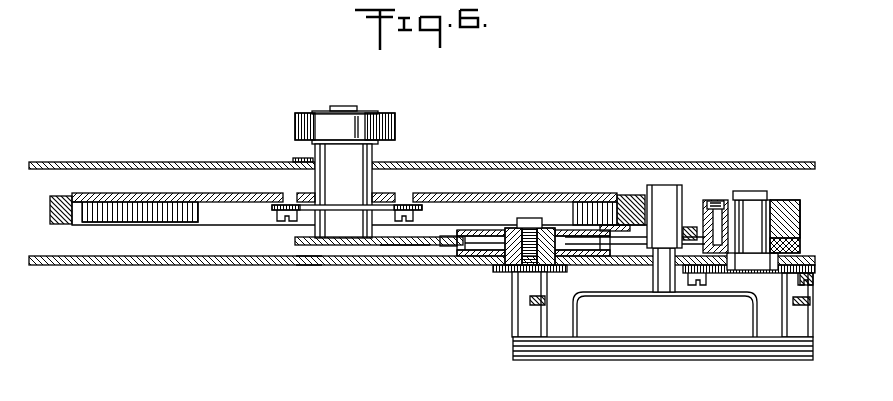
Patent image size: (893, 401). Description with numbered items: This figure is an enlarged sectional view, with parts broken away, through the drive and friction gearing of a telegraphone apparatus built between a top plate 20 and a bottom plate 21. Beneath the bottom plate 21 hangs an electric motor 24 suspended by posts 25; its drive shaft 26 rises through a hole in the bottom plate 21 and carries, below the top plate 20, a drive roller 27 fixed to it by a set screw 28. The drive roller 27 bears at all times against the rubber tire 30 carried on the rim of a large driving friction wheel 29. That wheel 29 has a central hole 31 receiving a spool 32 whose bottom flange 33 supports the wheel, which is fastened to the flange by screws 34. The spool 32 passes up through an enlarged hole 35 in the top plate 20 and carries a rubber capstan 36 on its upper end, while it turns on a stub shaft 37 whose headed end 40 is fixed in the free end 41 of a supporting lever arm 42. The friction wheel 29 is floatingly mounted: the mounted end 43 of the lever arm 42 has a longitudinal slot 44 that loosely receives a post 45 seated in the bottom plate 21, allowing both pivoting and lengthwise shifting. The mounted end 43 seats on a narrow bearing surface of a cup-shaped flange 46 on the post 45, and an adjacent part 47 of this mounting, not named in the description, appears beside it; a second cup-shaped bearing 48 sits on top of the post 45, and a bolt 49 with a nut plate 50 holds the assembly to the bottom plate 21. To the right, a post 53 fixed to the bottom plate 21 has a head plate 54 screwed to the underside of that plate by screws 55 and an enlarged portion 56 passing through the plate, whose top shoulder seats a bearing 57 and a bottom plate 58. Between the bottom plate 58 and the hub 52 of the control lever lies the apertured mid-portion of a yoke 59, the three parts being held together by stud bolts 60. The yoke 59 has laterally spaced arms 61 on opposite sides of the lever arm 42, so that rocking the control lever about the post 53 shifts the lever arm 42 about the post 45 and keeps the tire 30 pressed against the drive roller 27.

The top plate 20 is at (138, 161).
The bottom plate 21 is at (122, 266).
The electric motor 24 is at (690, 346).
The posts 25 is at (520, 311).
The drive shaft 26 is at (652, 279).
The drive roller 27 is at (666, 186).
The set screw 28 is at (690, 226).
The driving friction wheel 29 is at (514, 193).
The rubber tire 30 is at (632, 195).
The central hole 31 is at (376, 196).
The spool 32 is at (373, 162).
The bottom flange 33 is at (433, 201).
The screws 34 is at (277, 218).
The enlarged hole 35 is at (302, 158).
The capstan 36 is at (397, 121).
The stub shaft 37 is at (340, 106).
The headed end 40 is at (350, 246).
The free end 41 is at (305, 266).
The lever arm 42 is at (404, 246).
The mounted end 43 is at (586, 250).
The slot 44 is at (496, 246).
The post 45 is at (512, 228).
The cup-shaped flange 46 is at (471, 246).
The bar end 47 is at (443, 250).
The cup-shaped bearing 48 is at (578, 205).
The bolt 49 is at (531, 224).
The nut plate 50 is at (522, 286).
The hub 52 is at (782, 200).
The post 53 is at (752, 191).
The head plate 54 is at (749, 262).
The screws 55 is at (701, 287).
The enlarged portion 56 is at (750, 297).
The bearing 57 is at (776, 200).
The bottom plate 58 is at (801, 244).
The yoke 59 is at (801, 220).
The stud bolts 60 is at (716, 200).
The yoke arms 61 is at (624, 229).